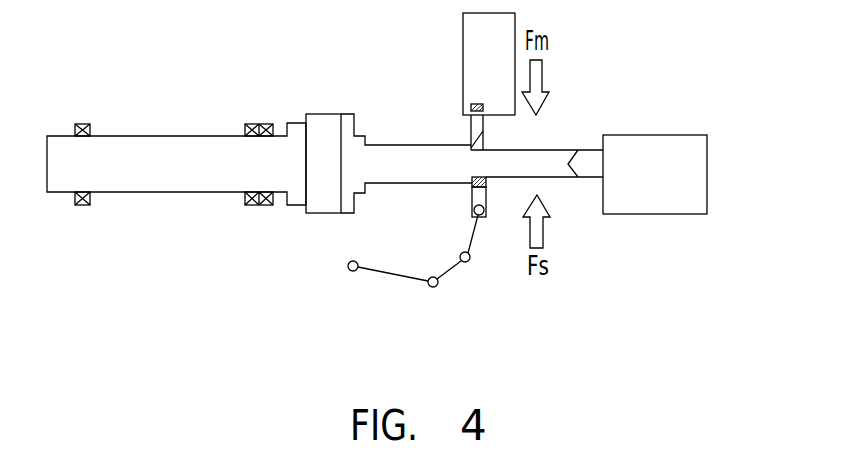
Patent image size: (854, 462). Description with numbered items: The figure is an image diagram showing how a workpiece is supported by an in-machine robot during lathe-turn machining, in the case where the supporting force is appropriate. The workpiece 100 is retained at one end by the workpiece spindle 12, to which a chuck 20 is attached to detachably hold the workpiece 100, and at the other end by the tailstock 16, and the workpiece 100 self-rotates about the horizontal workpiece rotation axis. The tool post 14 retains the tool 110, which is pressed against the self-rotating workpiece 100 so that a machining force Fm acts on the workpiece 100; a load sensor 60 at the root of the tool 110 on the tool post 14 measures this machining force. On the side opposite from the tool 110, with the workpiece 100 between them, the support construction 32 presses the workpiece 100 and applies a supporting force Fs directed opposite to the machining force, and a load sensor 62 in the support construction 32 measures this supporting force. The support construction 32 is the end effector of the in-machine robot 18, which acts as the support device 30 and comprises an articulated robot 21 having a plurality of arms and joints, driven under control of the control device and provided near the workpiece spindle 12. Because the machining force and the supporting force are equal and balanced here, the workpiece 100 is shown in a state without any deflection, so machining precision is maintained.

The workpiece spindle 12 is at (163, 182).
The chuck 20 is at (348, 113).
The workpiece 100 is at (378, 152).
The tool post 14 is at (468, 42).
The load sensor 60 is at (471, 105).
The tool 110 is at (483, 131).
The load sensor 62 is at (472, 190).
The support construction 32 is at (486, 198).
The tailstock 16 is at (662, 198).
The in-machine robot 18 is at (413, 284).
The support device 30 is at (420, 295).
The articulated robot 21 is at (452, 275).